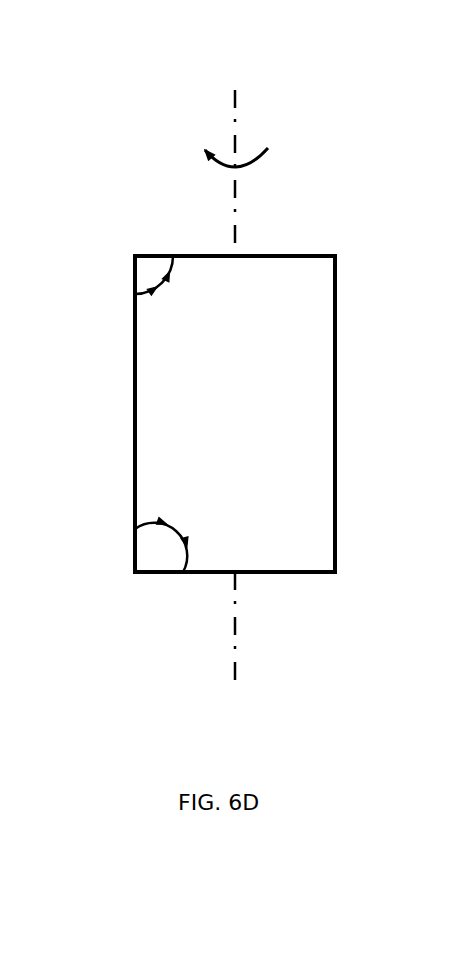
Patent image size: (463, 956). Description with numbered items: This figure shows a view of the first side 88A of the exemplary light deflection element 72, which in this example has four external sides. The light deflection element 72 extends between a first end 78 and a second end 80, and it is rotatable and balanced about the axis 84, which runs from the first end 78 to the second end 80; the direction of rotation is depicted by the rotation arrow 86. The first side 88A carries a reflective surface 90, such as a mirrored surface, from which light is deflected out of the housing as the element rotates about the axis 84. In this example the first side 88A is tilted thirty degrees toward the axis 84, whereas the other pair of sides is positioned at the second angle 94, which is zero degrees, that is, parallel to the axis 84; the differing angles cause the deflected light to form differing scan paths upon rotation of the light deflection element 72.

The light deflection element 72 is at (359, 143).
The first end 78 is at (287, 573).
The second end 80 is at (270, 256).
The axis 84 is at (240, 100).
The rotation arrow 86 is at (206, 152).
The first side 88A is at (300, 410).
The reflective surface 90 is at (253, 373).
The second angle 94 is at (140, 293).